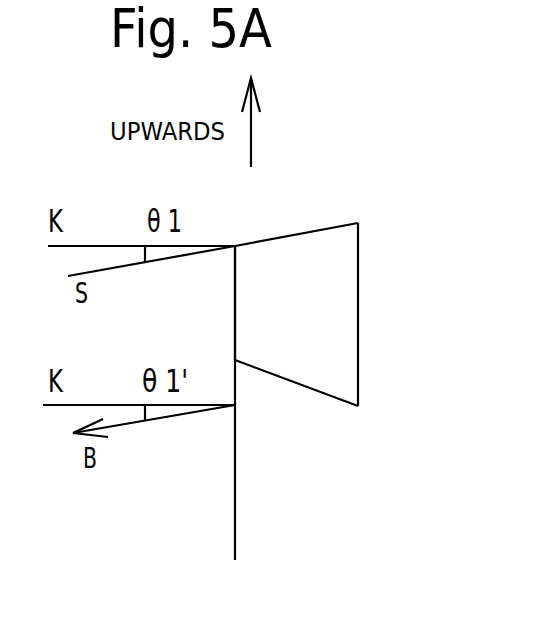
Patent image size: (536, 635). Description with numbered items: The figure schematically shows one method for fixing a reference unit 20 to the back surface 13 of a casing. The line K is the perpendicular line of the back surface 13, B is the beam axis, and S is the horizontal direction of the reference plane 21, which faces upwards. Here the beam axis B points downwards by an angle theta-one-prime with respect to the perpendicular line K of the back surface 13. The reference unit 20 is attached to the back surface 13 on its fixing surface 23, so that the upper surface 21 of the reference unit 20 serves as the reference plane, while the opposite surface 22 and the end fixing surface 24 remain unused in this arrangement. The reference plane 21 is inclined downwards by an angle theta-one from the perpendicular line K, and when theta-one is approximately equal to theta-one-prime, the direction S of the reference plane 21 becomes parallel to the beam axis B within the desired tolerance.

The back surface 13 is at (235, 508).
The reference unit 20 is at (301, 307).
The reference plane 21 is at (292, 233).
The surface of the reference unit 22 is at (298, 385).
The fixing surface 23 is at (235, 312).
The fixing surface 24 is at (358, 338).